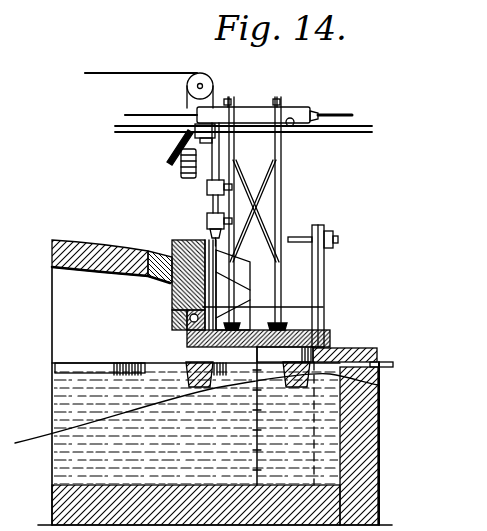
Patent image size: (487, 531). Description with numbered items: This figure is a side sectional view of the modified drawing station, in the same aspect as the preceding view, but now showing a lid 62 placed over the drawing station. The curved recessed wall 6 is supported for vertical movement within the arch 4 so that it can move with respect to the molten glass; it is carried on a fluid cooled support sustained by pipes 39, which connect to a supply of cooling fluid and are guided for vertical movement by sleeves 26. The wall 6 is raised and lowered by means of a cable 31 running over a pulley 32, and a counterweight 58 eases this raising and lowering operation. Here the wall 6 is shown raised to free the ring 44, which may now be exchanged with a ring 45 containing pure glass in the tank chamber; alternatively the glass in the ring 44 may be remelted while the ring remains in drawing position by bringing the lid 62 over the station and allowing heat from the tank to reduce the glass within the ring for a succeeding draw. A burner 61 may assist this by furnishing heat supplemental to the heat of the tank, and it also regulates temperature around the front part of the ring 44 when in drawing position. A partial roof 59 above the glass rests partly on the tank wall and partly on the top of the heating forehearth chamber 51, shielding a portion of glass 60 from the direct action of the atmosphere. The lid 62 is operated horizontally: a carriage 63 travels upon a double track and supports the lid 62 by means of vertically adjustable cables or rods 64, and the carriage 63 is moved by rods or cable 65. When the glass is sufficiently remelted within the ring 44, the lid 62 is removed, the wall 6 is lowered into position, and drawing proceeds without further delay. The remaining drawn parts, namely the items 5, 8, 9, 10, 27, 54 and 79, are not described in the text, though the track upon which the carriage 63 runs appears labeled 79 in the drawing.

The arch 4 is at (152, 250).
The curved beam 5 is at (72, 240).
The curved recessed wall 6 is at (171, 301).
The bar 8 is at (58, 372).
The tank 9 is at (78, 460).
The tank wall 10 is at (53, 308).
The sleeves 26 is at (207, 188).
The bracket post 27 is at (325, 268).
The cable 31 is at (93, 72).
The pulley 32 is at (197, 73).
The pipes 39 is at (210, 207).
The ring 44 is at (173, 148).
The ring 45 is at (194, 358).
The heating forehearth chamber 51 is at (378, 414).
The base plate 54 is at (186, 332).
The counterweight 58 is at (182, 170).
The partial roof 59 is at (345, 347).
The glass 60 is at (211, 408).
The burner 61 is at (390, 362).
The lid 62 is at (300, 328).
The carriage 63 is at (296, 107).
The cables or rods 64 is at (282, 192).
The rods or cable 65 is at (125, 114).
The rail 79 is at (360, 128).